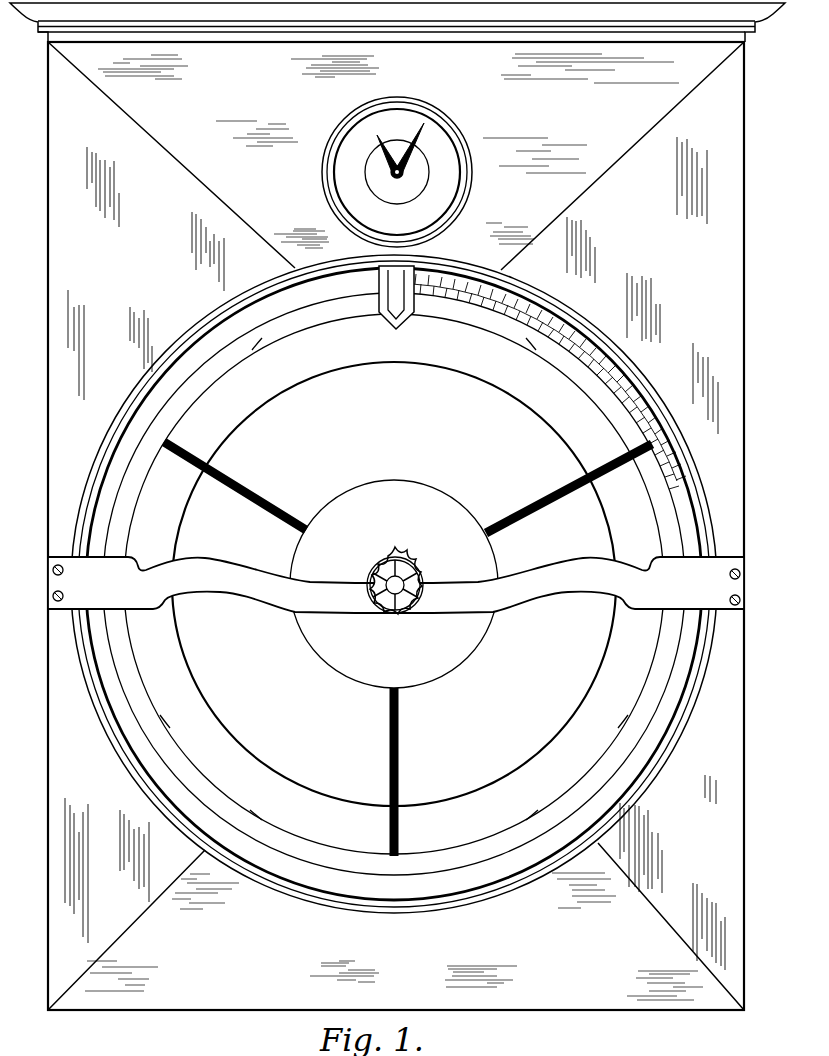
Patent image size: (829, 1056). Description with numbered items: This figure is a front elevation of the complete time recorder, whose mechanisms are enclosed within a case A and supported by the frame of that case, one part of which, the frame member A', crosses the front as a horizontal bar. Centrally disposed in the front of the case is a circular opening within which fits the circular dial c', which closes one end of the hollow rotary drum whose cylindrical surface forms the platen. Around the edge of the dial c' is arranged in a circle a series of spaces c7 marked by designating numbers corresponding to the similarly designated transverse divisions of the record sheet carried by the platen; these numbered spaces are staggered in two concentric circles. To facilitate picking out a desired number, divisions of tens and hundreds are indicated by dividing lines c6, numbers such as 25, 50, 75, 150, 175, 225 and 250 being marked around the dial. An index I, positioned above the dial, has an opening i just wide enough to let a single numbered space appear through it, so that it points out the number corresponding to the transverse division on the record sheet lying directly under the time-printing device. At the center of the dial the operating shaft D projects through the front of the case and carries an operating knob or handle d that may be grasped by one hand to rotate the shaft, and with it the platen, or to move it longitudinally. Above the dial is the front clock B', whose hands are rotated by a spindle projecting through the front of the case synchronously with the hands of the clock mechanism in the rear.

The case A is at (397, 506).
The front clock B' is at (411, 172).
The frame part A' is at (396, 585).
The circular dial c' is at (394, 584).
The dividing lines c6 is at (401, 790).
The numbered spaces c7 is at (490, 322).
The operating knob or handle d is at (405, 562).
The operating shaft D is at (386, 604).
The opening i is at (384, 296).
The index I is at (384, 313).
The scale mark 50 is at (396, 314).
The scale mark 75 is at (263, 350).
The scale mark 25 is at (532, 355).
The scale mark 150 is at (168, 716).
The scale mark 175 is at (255, 809).
The scale mark 225 is at (528, 811).
The scale mark 250 is at (621, 716).